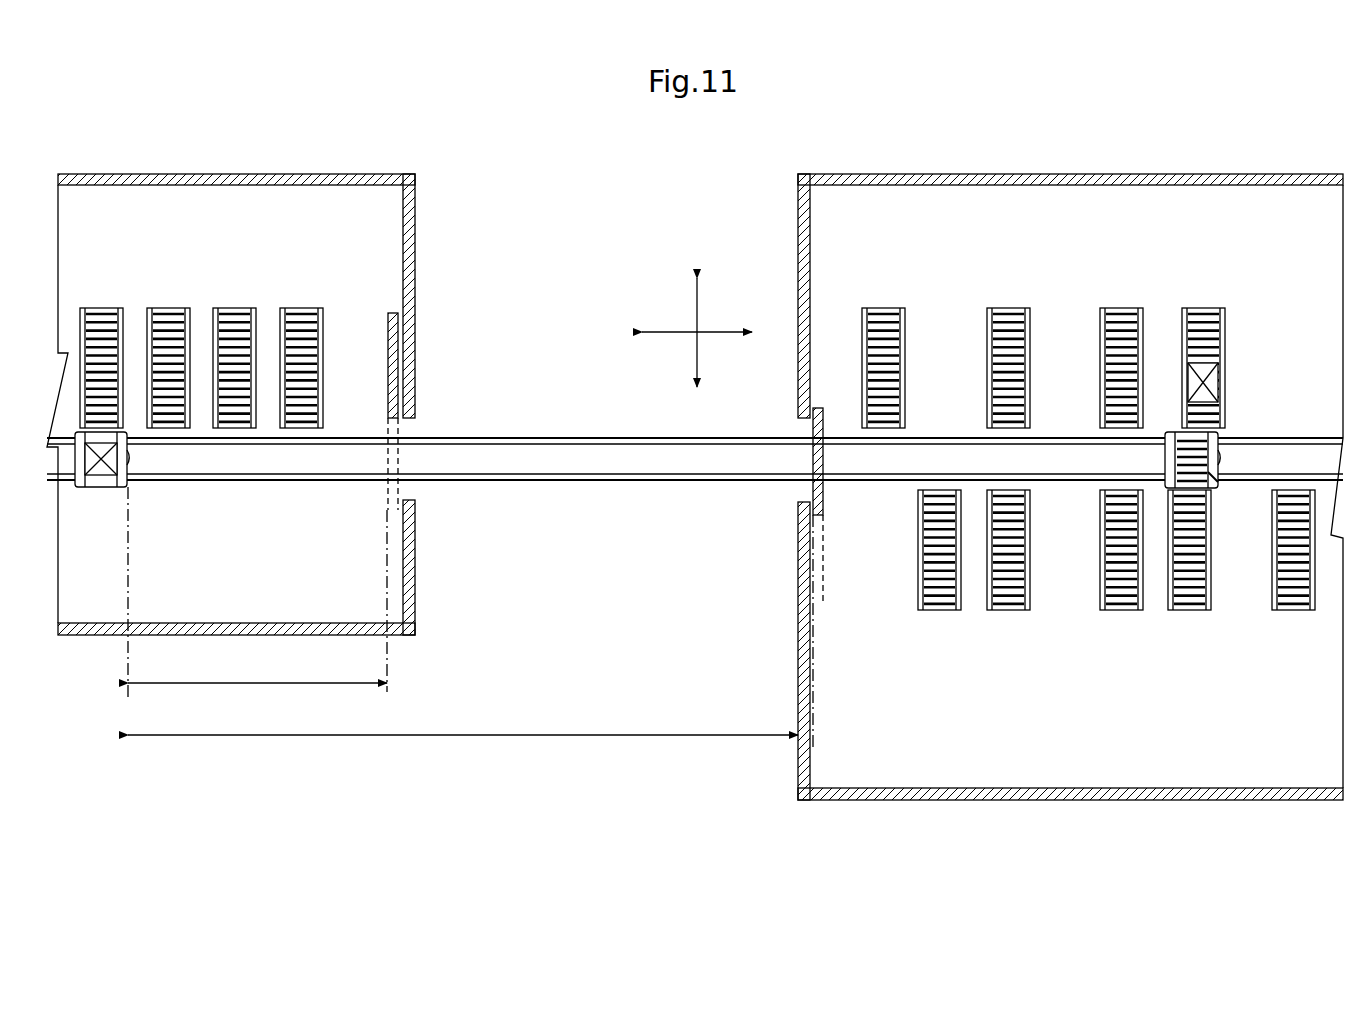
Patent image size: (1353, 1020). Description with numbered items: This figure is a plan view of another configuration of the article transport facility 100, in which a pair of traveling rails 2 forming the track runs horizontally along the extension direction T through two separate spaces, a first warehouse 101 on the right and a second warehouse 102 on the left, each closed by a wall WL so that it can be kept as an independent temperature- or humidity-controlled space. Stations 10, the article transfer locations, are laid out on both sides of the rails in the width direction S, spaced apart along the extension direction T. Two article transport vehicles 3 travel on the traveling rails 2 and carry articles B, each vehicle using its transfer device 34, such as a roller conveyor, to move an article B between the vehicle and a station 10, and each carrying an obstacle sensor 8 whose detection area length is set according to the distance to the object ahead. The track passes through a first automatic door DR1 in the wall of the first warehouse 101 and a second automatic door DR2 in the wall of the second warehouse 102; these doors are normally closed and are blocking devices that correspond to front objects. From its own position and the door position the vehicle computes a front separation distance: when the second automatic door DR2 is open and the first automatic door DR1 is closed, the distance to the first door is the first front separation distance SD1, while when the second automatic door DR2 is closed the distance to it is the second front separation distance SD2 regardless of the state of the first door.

The article transport facility 100 is at (667, 777).
The first warehouse 101 is at (1044, 753).
The second warehouse 102 is at (316, 208).
The wall WL is at (415, 226).
The first automatic door DR1 is at (820, 407).
The second automatic door DR2 is at (388, 322).
The traveling rail 2 is at (885, 483).
The article transport vehicle 3 is at (135, 485).
The obstacle sensor 8 is at (130, 456).
The station 10 is at (173, 308).
The transfer device 34 is at (1216, 478).
The article B is at (100, 478).
The first front separation distance SD1 is at (463, 718).
The second front separation distance SD2 is at (257, 593).
The extension direction T is at (698, 317).
The width direction S is at (686, 334).